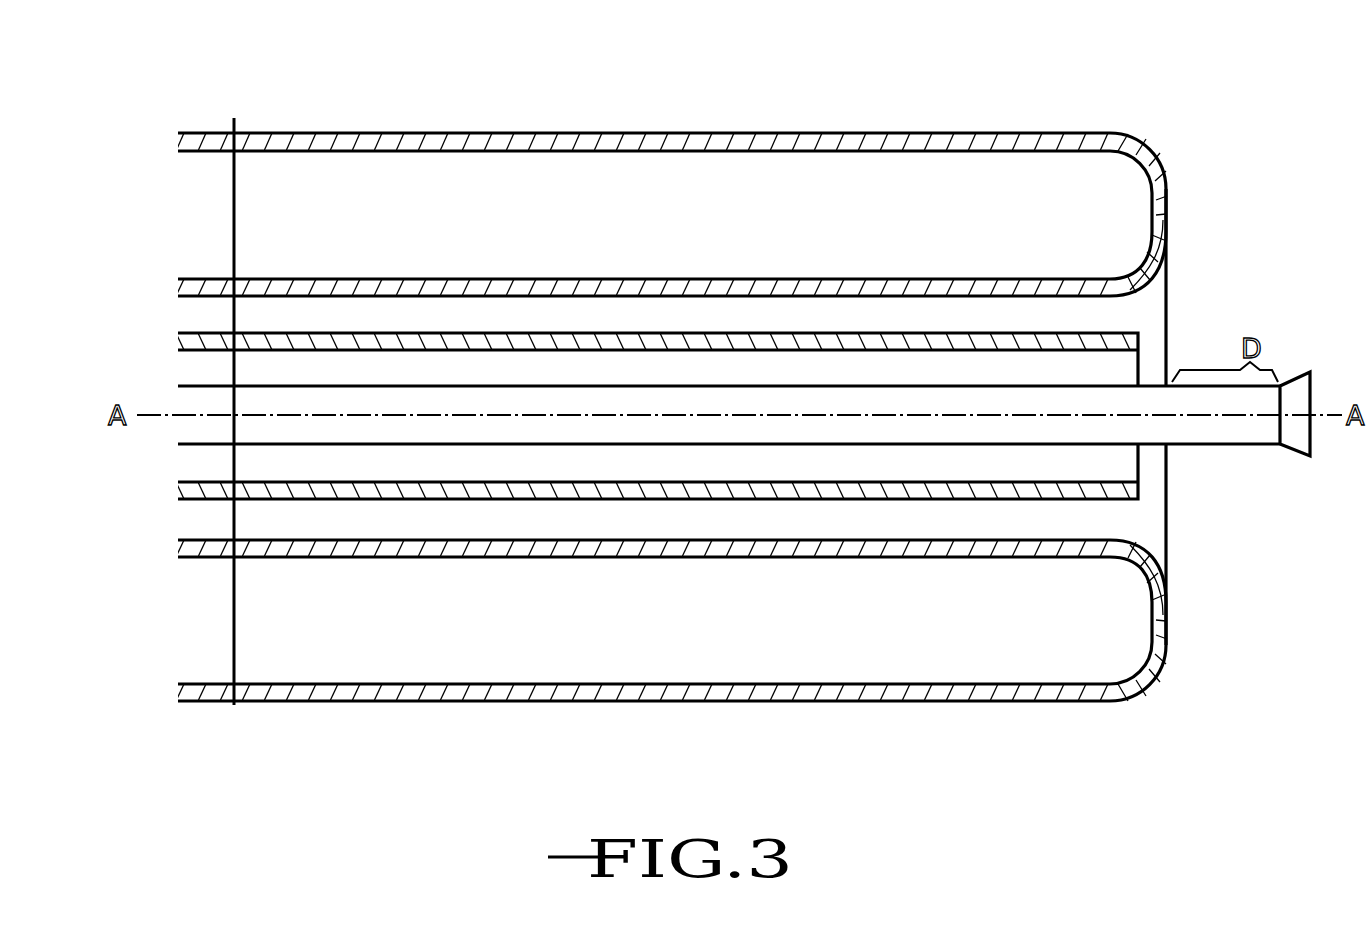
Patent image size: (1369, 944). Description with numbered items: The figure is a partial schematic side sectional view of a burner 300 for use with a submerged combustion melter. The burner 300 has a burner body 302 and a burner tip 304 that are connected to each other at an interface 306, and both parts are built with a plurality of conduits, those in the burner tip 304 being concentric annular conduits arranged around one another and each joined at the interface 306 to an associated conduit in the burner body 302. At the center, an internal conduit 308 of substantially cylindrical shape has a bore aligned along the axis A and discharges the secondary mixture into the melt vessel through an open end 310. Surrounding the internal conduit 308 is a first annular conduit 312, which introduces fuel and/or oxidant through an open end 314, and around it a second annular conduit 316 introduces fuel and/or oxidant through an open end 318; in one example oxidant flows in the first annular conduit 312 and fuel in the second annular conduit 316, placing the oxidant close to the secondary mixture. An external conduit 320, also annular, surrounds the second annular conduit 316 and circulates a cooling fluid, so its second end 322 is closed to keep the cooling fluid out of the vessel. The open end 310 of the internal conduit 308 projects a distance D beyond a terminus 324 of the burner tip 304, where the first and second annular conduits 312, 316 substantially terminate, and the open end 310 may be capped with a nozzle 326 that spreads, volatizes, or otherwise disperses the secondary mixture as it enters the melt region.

The burner 300 is at (901, 93).
The burner body 302 is at (142, 182).
The burner tip 304 is at (672, 406).
The interface 306 is at (237, 126).
The internal conduit 308 is at (331, 429).
The open end 310 is at (1292, 367).
The first annular conduit 312 is at (1122, 370).
The open end 314 is at (1148, 474).
The second annular conduit 316 is at (1120, 305).
The open end 318 is at (1176, 231).
The external conduit 320 is at (428, 170).
The second end 322 is at (1140, 133).
The terminus 324 is at (1174, 620).
The nozzle 326 is at (1297, 435).